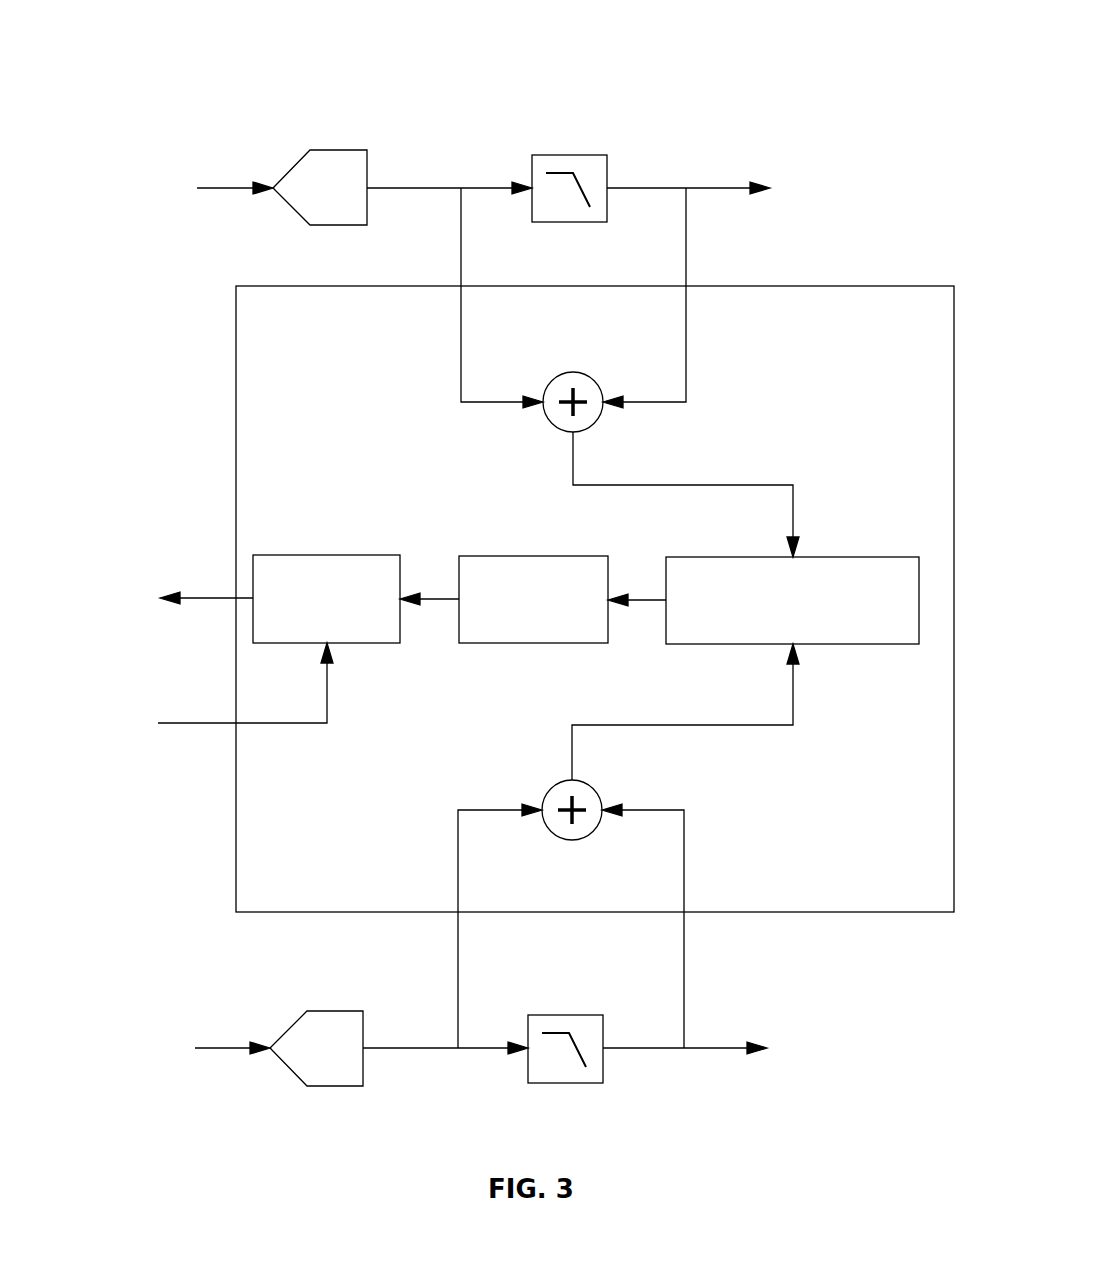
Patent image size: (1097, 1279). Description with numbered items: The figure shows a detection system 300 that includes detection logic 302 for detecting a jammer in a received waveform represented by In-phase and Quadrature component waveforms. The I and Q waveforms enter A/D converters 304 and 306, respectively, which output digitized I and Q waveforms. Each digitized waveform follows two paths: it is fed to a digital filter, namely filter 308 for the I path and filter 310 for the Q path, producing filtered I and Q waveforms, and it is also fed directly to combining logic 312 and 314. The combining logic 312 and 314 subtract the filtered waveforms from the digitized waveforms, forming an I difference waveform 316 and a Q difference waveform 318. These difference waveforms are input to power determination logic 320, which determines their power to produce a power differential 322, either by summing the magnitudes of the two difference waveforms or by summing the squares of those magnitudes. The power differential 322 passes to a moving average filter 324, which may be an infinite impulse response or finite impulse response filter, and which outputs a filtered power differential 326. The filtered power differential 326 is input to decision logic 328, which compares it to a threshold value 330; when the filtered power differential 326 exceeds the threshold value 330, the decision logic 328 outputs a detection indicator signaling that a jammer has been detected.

The detection system 300 is at (843, 37).
The detection logic 302 is at (595, 568).
The A/D converter 304 is at (307, 167).
The A/D converter 306 is at (290, 1028).
The filter 308 is at (568, 167).
The filter 310 is at (565, 1070).
The combining logic 312 is at (573, 317).
The combining logic 314 is at (571, 906).
The difference waveform I_DIF 316 is at (703, 494).
The difference waveform Q_DIF 318 is at (702, 712).
The power determination logic 320 is at (805, 579).
The power differential 322 is at (394, 608).
The moving average filter 324 is at (541, 578).
The filtered power differential 326 is at (460, 638).
The decision logic 328 is at (333, 578).
The threshold value 330 is at (188, 716).